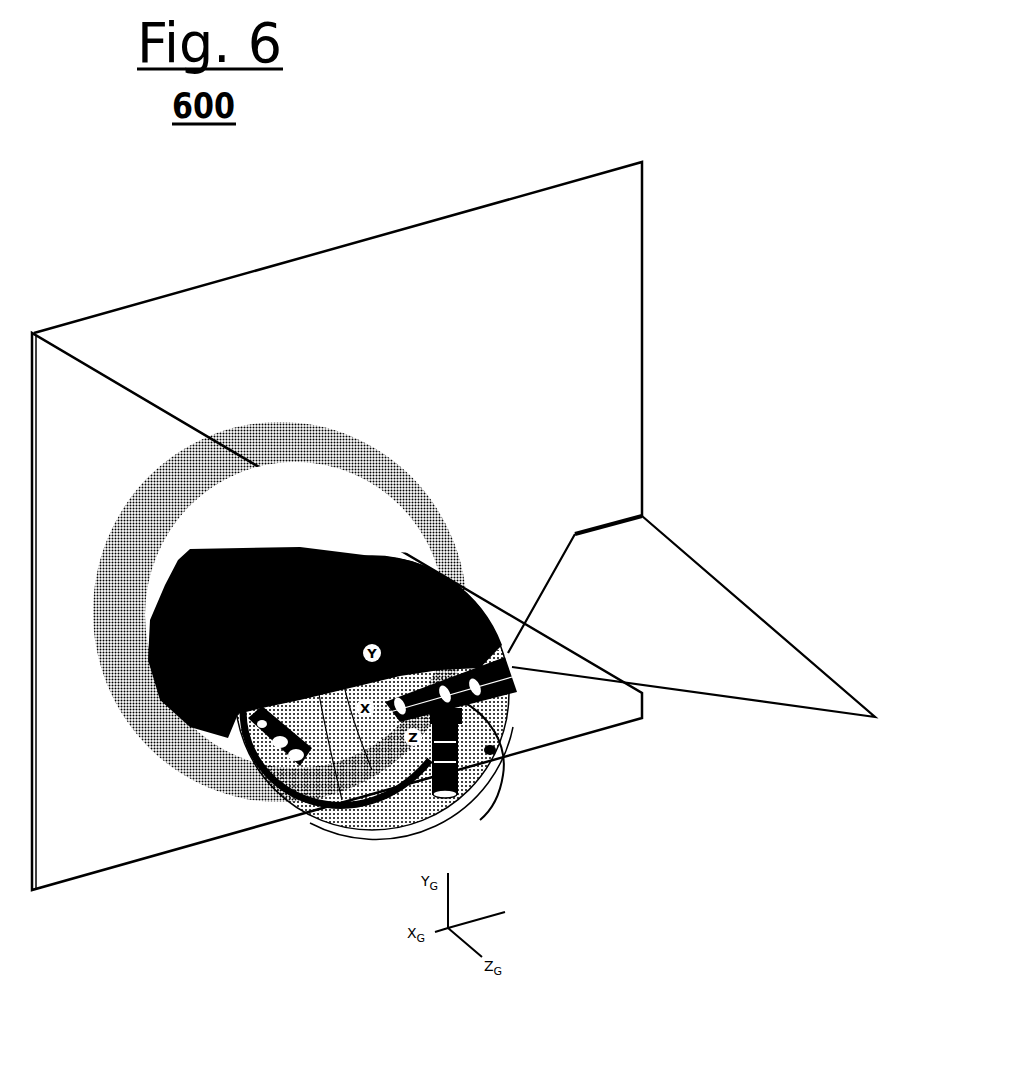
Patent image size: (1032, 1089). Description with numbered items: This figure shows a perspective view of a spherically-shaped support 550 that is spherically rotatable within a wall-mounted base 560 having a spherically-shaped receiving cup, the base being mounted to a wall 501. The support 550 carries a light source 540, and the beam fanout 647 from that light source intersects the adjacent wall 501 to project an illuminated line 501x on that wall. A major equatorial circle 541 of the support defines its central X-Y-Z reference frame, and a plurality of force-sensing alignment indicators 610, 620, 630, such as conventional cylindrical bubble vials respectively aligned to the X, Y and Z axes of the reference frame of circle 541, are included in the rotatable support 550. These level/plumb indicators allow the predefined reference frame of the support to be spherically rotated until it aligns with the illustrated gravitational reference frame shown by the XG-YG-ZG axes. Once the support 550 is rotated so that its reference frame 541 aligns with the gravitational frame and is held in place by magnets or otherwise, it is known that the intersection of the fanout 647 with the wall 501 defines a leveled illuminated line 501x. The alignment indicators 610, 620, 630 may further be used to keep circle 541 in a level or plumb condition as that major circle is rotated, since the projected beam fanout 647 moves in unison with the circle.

The wall 501 is at (462, 212).
The line 501x is at (605, 517).
The light source 540 is at (508, 653).
The major equatorial circle 541 is at (525, 712).
The spherically-shaped support 550 is at (350, 835).
The wall-mounted base 560 is at (215, 810).
The force-sensing alignment indicator 610 is at (492, 820).
The force-sensing alignment indicator 620 is at (492, 755).
The force-sensing alignment indicator 630 is at (313, 803).
The fanout 647 is at (735, 698).